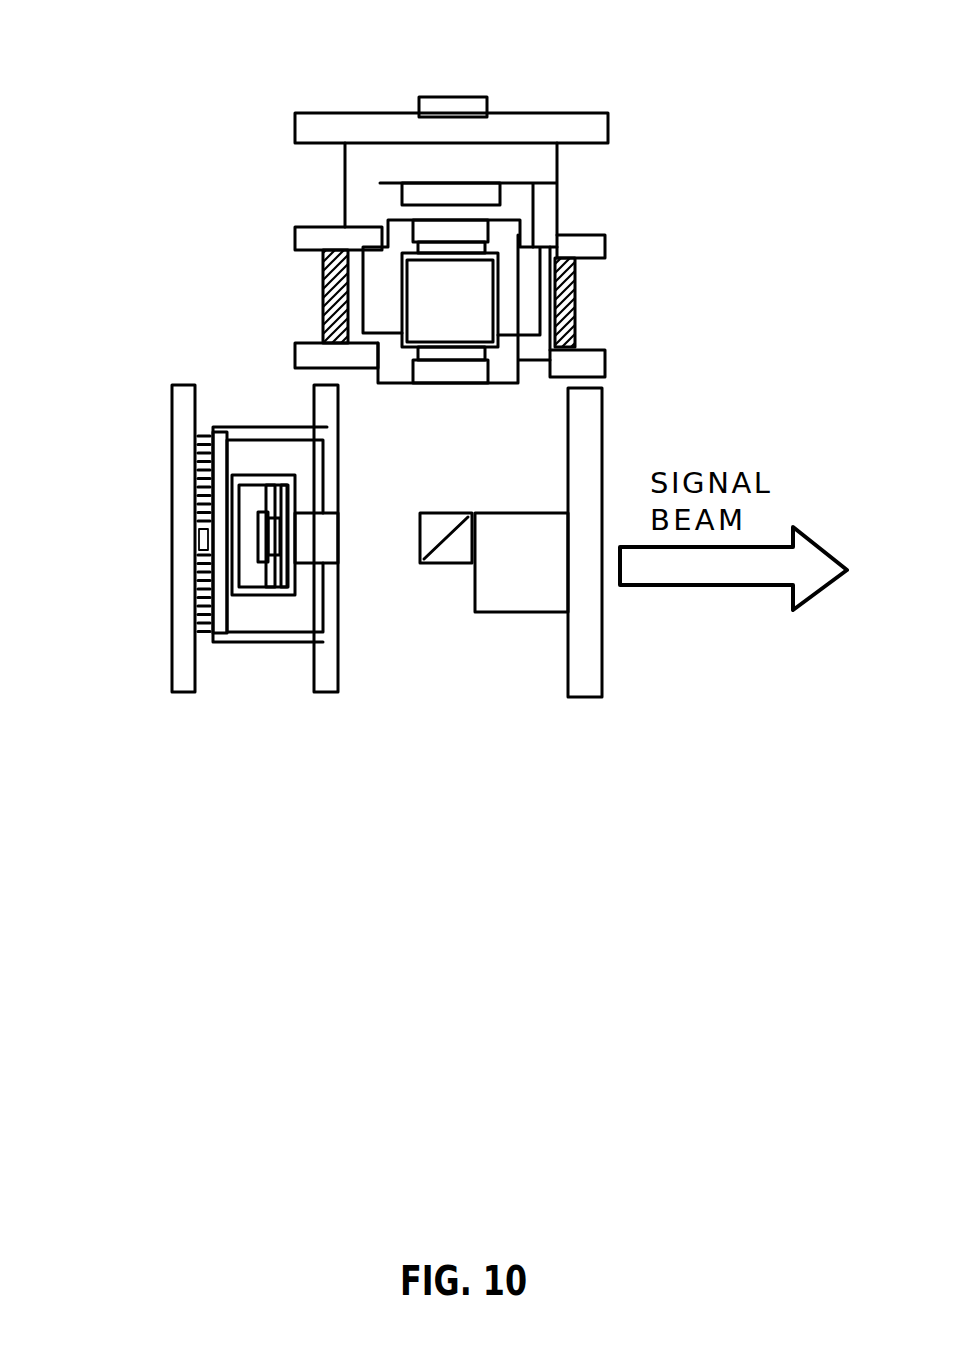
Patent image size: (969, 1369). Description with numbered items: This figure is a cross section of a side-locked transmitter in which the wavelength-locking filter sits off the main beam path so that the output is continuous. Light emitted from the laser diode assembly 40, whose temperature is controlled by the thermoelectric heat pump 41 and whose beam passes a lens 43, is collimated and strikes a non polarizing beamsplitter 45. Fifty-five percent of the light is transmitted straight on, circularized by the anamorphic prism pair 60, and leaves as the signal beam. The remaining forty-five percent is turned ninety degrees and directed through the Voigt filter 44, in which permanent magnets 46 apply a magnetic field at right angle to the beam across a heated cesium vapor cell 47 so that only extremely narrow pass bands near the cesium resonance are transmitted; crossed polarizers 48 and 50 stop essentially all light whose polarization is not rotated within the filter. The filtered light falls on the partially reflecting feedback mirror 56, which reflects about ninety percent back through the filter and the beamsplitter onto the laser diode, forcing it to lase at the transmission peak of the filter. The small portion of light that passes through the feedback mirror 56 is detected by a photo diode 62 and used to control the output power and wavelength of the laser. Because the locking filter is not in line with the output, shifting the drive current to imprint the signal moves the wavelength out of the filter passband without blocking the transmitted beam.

The diode laser 40 is at (262, 580).
The thermoelectric heat pump 41 is at (207, 573).
The collimating lens 43 is at (302, 580).
The Voigt filter 44 is at (607, 243).
The non polarizing beamsplitter 45 is at (438, 567).
The permanent magnets 46 is at (323, 302).
The mirror element 47 is at (490, 322).
The polarizer 48 is at (413, 377).
The polarizer 50 is at (417, 235).
The feedback mirror 56 is at (402, 192).
The anamorphic prism pair 60 is at (515, 613).
The photo diode 62 is at (413, 103).